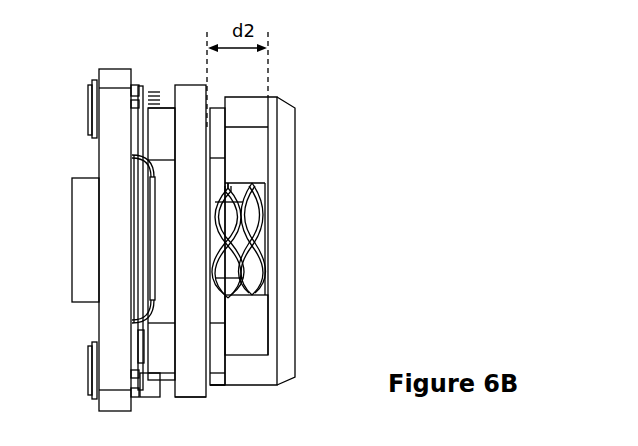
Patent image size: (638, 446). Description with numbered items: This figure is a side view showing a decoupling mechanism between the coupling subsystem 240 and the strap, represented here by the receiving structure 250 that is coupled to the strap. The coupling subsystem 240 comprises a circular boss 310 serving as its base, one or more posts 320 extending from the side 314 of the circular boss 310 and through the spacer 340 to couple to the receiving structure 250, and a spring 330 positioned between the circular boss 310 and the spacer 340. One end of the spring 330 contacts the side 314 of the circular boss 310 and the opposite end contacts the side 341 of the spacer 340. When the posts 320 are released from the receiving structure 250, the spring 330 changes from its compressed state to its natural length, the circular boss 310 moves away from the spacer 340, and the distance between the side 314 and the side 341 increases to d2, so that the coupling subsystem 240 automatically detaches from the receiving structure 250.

The receiving structure 250 is at (100, 54).
The spacer 340 is at (188, 97).
The posts 320 is at (162, 123).
The coupling subsystem 240 is at (298, 66).
The circular boss 310 is at (277, 157).
The spring 330 is at (243, 222).
The side of the circular boss 314 is at (273, 244).
The side of the spacer 341 is at (214, 389).